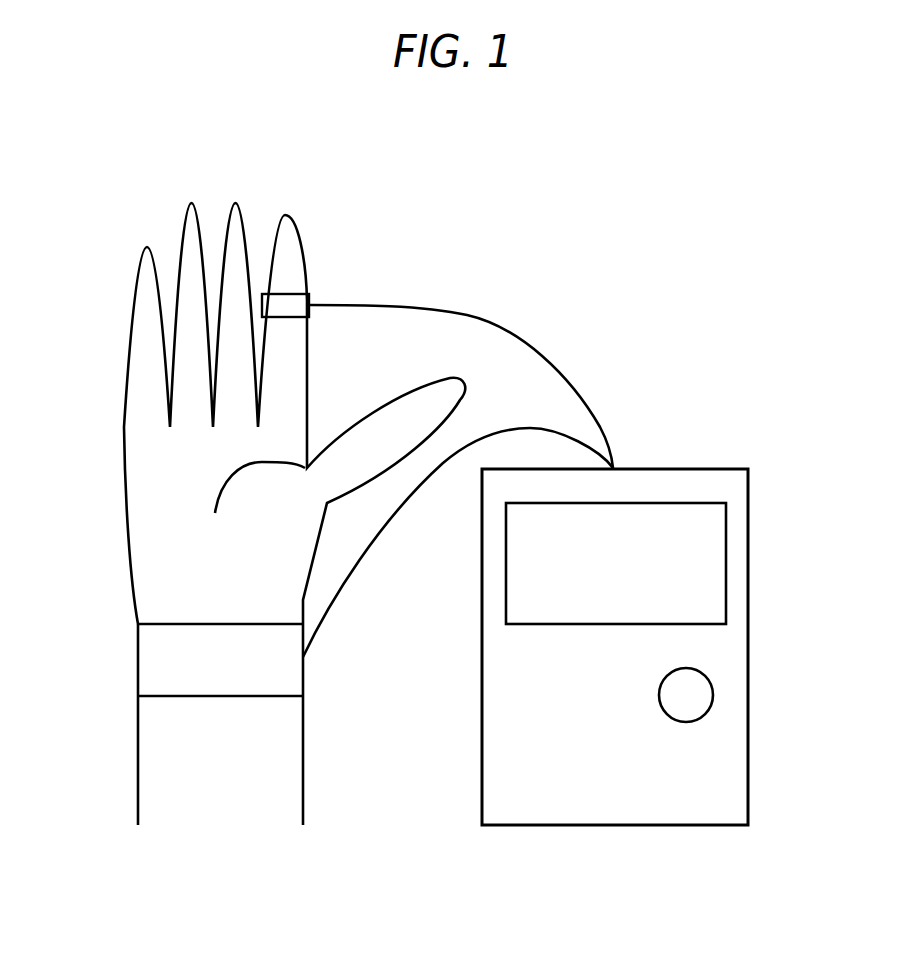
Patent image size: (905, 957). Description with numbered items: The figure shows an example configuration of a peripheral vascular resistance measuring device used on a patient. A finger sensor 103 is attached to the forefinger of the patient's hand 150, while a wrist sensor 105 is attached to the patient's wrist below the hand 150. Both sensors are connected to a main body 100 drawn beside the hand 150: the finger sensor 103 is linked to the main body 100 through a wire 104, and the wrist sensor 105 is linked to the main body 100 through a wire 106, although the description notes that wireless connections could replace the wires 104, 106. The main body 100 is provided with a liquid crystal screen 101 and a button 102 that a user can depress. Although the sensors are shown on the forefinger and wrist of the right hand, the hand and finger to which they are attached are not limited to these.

The main body 100 is at (670, 468).
The liquid crystal screen 101 is at (726, 563).
The button 102 is at (713, 695).
The finger sensor 103 is at (308, 293).
The wire 104 is at (507, 328).
The wrist sensor 105 is at (138, 660).
The wire 106 is at (430, 473).
The hand 150 is at (123, 423).